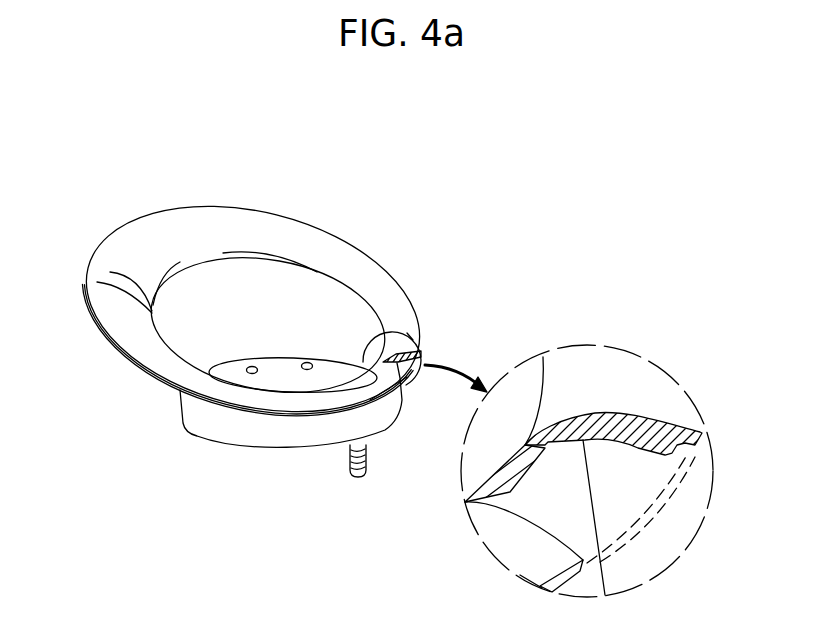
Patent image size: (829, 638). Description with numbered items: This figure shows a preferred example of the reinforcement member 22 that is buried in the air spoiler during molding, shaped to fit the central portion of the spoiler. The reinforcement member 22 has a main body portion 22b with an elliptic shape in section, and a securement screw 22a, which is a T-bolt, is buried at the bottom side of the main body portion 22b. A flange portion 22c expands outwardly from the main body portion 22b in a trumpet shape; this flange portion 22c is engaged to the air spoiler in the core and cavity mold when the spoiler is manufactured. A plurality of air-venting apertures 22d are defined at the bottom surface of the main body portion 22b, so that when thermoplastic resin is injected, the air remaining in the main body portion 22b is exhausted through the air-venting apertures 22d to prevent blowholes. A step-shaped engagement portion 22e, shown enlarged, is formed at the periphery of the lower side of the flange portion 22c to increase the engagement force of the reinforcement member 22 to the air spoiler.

The reinforcement member 22 is at (338, 219).
The securement screw 22a is at (348, 463).
The main body portion 22b is at (262, 430).
The flange portion 22c is at (160, 362).
The air-venting apertures 22d is at (250, 365).
The step-shaped engagement portion 22e is at (697, 452).